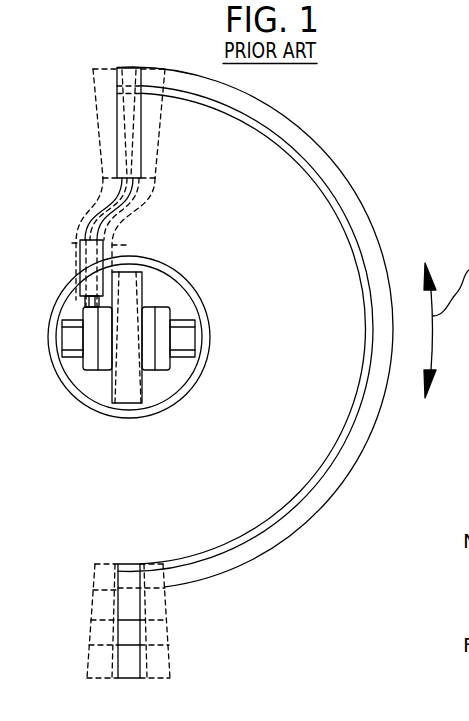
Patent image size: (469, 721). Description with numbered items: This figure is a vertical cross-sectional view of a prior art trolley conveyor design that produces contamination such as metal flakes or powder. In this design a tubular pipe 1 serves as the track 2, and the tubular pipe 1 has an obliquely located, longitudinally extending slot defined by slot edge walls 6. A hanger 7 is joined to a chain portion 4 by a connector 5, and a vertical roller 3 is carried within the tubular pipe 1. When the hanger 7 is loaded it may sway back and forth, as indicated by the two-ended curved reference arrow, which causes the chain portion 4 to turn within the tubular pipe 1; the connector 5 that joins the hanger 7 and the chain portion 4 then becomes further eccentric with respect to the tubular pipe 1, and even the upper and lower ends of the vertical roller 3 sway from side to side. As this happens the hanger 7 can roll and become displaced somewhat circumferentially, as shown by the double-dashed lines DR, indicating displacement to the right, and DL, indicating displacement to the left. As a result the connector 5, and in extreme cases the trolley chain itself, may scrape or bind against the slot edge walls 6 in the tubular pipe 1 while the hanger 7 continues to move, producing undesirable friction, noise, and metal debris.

The tubular pipe 1 is at (203, 313).
The track 2 is at (167, 288).
The vertical roller 3 is at (112, 390).
The chain portion 4 is at (77, 357).
The connector 5 is at (80, 242).
The slot edge walls 6 is at (74, 262).
The hanger 7 is at (307, 138).
The displacement to the left DL is at (100, 147).
The displacement to the right DR is at (160, 152).